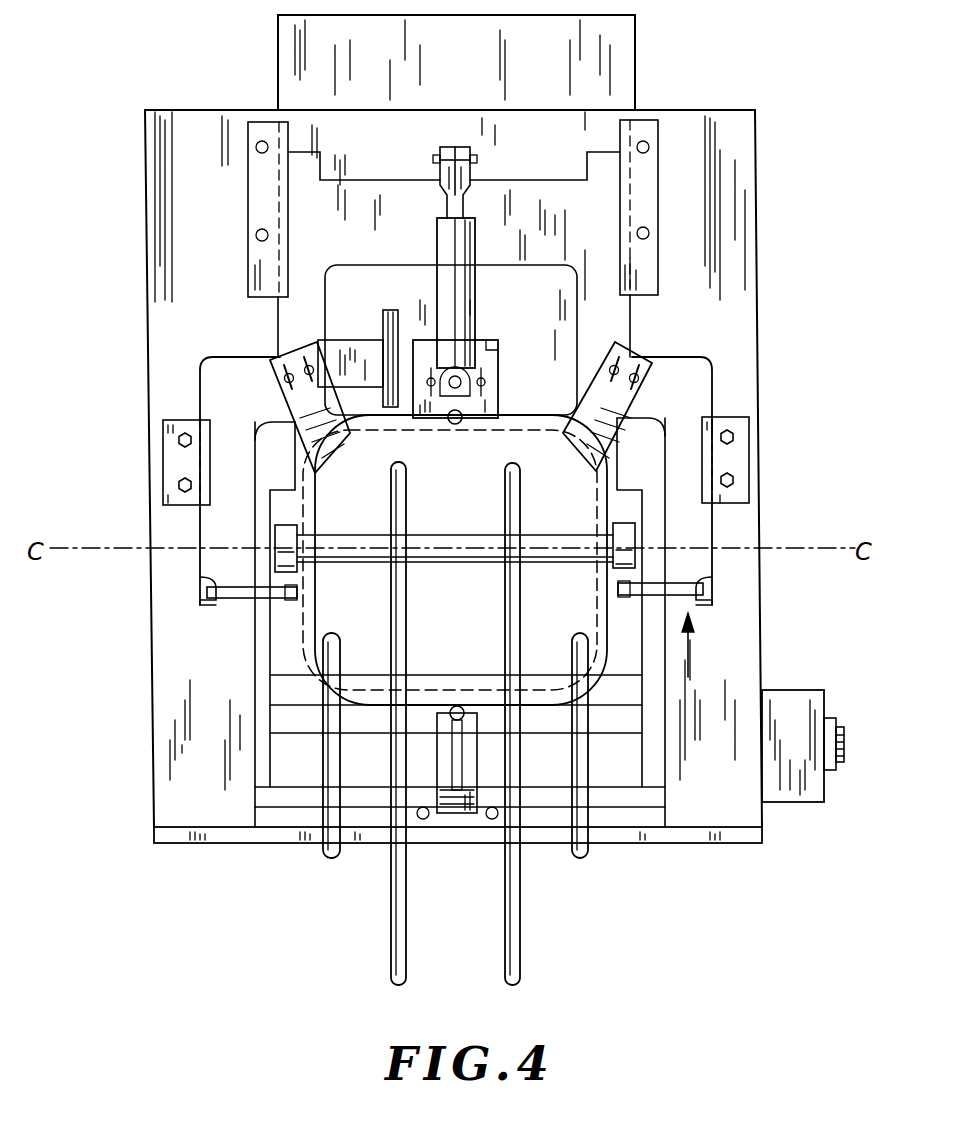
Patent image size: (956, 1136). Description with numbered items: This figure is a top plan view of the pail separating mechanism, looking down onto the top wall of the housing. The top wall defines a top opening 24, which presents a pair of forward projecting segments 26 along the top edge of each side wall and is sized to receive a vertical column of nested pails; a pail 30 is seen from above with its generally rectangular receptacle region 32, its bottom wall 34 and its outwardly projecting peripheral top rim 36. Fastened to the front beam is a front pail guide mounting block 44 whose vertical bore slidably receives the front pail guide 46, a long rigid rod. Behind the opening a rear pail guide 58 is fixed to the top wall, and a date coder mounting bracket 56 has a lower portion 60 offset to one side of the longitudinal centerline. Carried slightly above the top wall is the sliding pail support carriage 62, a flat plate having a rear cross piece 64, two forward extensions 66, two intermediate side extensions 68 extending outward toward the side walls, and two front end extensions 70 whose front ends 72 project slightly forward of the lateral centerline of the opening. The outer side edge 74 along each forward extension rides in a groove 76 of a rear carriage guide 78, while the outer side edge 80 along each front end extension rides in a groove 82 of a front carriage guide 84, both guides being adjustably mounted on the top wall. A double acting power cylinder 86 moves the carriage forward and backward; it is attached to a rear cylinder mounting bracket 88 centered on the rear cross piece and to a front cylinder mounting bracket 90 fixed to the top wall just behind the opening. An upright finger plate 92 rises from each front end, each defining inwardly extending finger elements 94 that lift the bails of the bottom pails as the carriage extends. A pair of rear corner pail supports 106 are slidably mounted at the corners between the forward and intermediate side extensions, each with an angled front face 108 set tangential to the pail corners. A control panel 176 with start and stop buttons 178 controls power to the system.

The top opening 24 is at (258, 815).
The forward projecting segments 26 is at (178, 748).
The pail 30 is at (292, 657).
The receptacle region 32 is at (350, 628).
The bottom wall 34 is at (472, 620).
The peripheral top rim 36 is at (423, 432).
The front pail guide mounting block 44 is at (456, 815).
The front pail guide 46 is at (457, 706).
The date coder mounting bracket 56 is at (410, 322).
The rear pail guide 58 is at (457, 425).
The lower portion of the mounting bracket 60 is at (348, 350).
The sliding pail support carriage 62 is at (725, 392).
The rear cross piece 64 is at (386, 188).
The forward extensions 66 is at (296, 331).
The intermediate side extensions 68 is at (712, 360).
The front end extensions 70 is at (216, 528).
The front ends 72 is at (214, 604).
The outer side edge 74 is at (279, 312).
The groove 76 is at (288, 212).
The rear carriage guide 78 is at (258, 200).
The outer side edge 80 is at (198, 398).
The groove 82 is at (163, 452).
The front carriage guide 84 is at (168, 478).
The double acting power cylinder 86 is at (455, 293).
The rear cylinder mounting bracket 88 is at (452, 147).
The front cylinder mounting bracket 90 is at (492, 352).
The upright finger plate 92 is at (208, 582).
The finger elements 94 is at (300, 592).
The rear corner pail supports 106 is at (292, 406).
The angled front face 108 is at (318, 458).
The control panel 176 is at (831, 770).
The start and stop buttons 178 is at (846, 745).